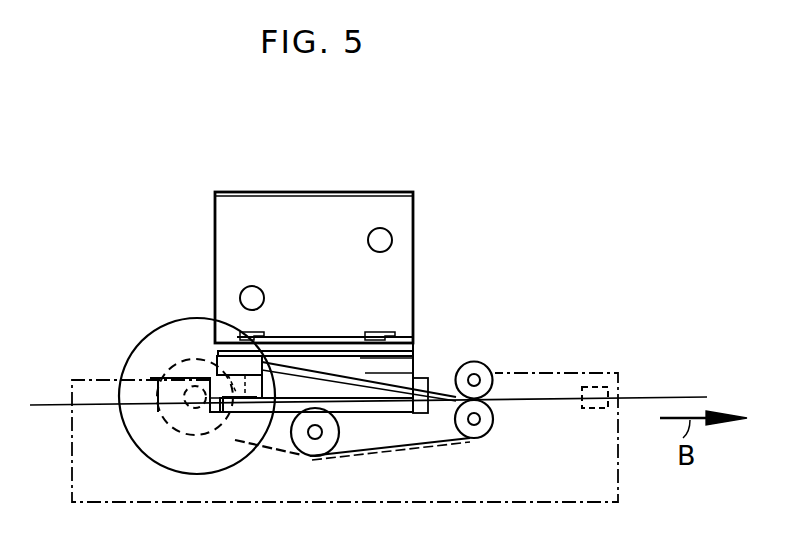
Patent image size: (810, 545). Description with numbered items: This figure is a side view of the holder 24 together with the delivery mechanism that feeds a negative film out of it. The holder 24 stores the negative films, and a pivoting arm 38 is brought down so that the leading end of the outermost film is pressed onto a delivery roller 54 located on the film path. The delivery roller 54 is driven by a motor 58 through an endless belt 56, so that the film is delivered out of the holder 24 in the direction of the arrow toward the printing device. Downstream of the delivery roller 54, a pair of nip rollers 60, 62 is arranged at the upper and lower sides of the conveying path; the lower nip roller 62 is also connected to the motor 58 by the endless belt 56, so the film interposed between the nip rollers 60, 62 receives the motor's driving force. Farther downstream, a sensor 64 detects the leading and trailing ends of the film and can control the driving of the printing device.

The holder 24 is at (413, 262).
The pivoting arm 38 is at (423, 364).
The delivery roller 54 is at (318, 446).
The endless belt 56 is at (418, 350).
The motor 58 is at (231, 467).
The nip roller 60 is at (492, 366).
The nip roller 62 is at (492, 423).
The sensor 64 is at (603, 382).